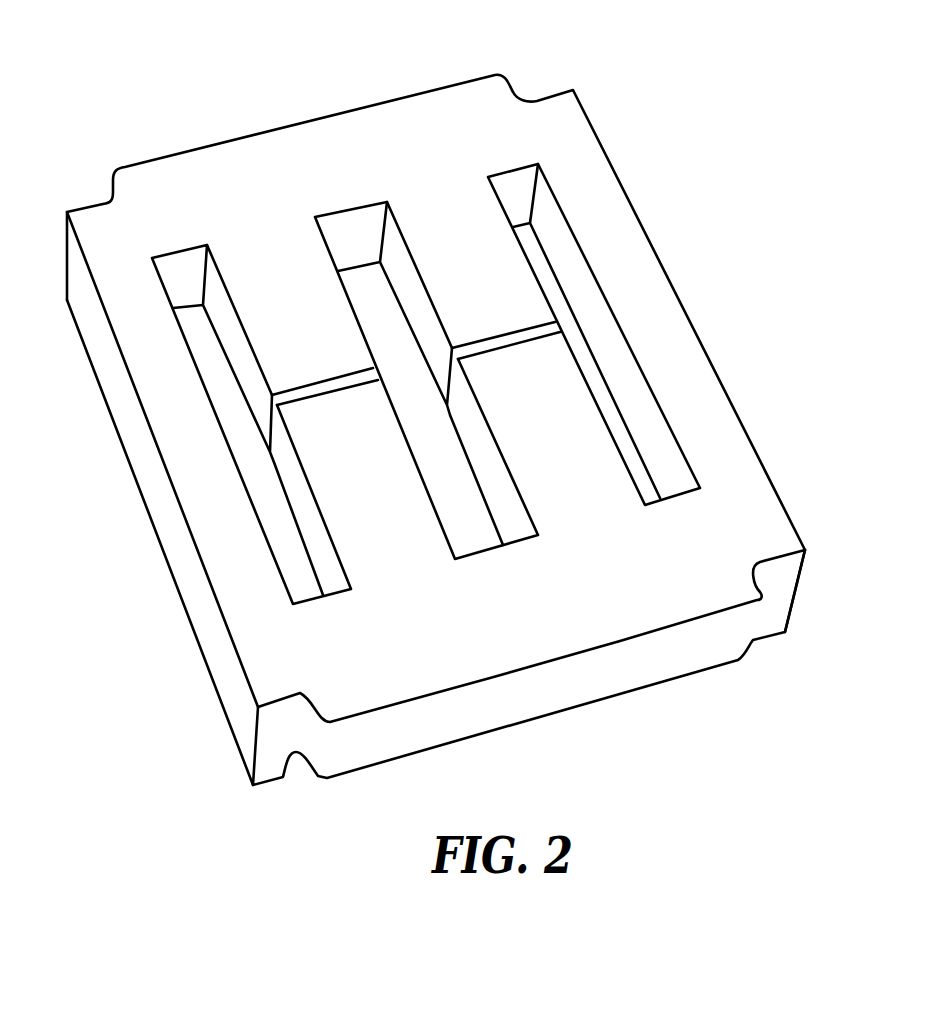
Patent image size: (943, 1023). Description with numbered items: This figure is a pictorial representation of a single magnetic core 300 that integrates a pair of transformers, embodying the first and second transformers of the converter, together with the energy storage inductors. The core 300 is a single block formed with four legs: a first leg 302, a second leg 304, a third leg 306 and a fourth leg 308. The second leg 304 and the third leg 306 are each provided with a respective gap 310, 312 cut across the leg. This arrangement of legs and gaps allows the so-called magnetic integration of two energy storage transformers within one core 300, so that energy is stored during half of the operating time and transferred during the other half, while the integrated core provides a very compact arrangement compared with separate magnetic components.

The single magnetic core 300 is at (250, 97).
The first leg 302 is at (143, 373).
The second leg 304 is at (322, 478).
The third leg 306 is at (527, 297).
The fourth leg 308 is at (693, 372).
The gap 310 is at (320, 389).
The gap 312 is at (488, 345).